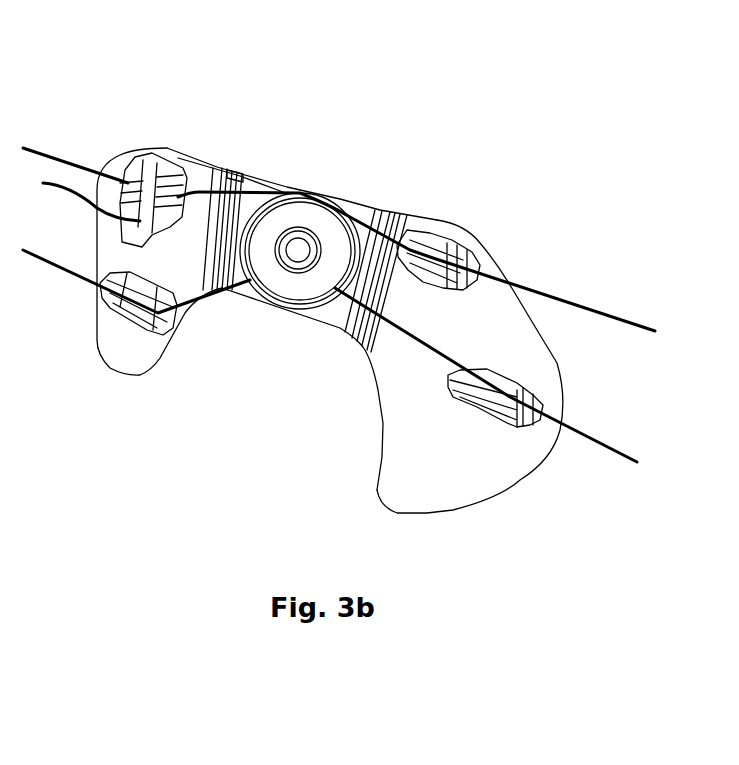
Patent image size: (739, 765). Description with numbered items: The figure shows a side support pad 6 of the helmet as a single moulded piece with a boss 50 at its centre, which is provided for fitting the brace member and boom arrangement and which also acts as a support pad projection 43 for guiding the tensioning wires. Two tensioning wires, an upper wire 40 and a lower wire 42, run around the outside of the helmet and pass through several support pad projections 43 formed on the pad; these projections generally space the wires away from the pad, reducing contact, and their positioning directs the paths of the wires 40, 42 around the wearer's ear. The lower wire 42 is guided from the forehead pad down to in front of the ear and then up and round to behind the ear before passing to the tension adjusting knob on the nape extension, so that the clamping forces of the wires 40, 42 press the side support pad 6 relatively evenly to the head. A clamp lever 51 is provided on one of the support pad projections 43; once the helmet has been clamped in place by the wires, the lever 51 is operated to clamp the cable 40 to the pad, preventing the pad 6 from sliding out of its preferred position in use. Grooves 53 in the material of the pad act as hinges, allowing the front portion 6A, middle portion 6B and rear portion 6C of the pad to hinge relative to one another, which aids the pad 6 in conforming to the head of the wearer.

The side support pad 6 is at (440, 487).
The front portion 6A is at (110, 243).
The middle portion 6B is at (327, 320).
The rear portion 6C is at (402, 427).
The upper tensioning wire 40 is at (55, 152).
The lower tensioning wire 42 is at (53, 268).
The support pad projection 43 is at (128, 170).
The boss 50 is at (308, 220).
The clamp lever 51 is at (43, 183).
The grooves 53 is at (222, 175).